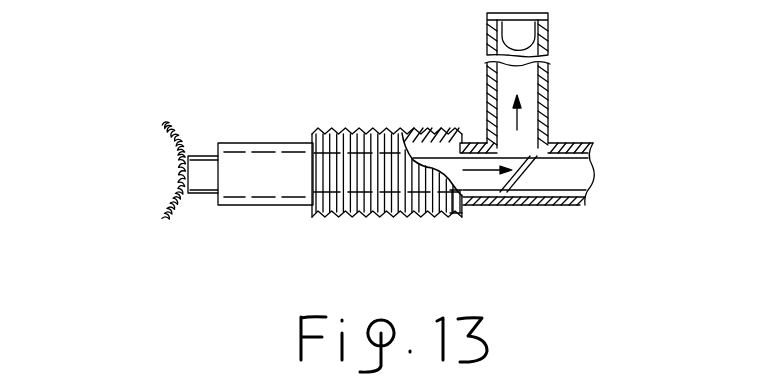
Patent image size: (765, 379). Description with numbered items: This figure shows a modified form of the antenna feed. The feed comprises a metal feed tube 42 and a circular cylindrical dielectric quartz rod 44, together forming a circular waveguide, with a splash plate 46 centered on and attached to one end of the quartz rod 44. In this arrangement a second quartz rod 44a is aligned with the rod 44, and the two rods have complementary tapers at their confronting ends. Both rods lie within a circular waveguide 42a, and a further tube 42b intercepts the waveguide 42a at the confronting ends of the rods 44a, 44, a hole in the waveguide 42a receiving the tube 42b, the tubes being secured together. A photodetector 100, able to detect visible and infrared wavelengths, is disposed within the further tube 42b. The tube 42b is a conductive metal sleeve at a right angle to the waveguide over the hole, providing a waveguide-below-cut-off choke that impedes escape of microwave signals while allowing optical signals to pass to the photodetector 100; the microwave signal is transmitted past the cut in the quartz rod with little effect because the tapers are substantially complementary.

The metal feed tube 42 is at (313, 133).
The circular waveguide 42a is at (560, 145).
The further tube 42b is at (540, 83).
The circular cylindrical dielectric quartz rod 44 is at (477, 178).
The second quartz rod 44a is at (565, 168).
The splash plate 46 is at (178, 140).
The photodetector 100 is at (517, 37).